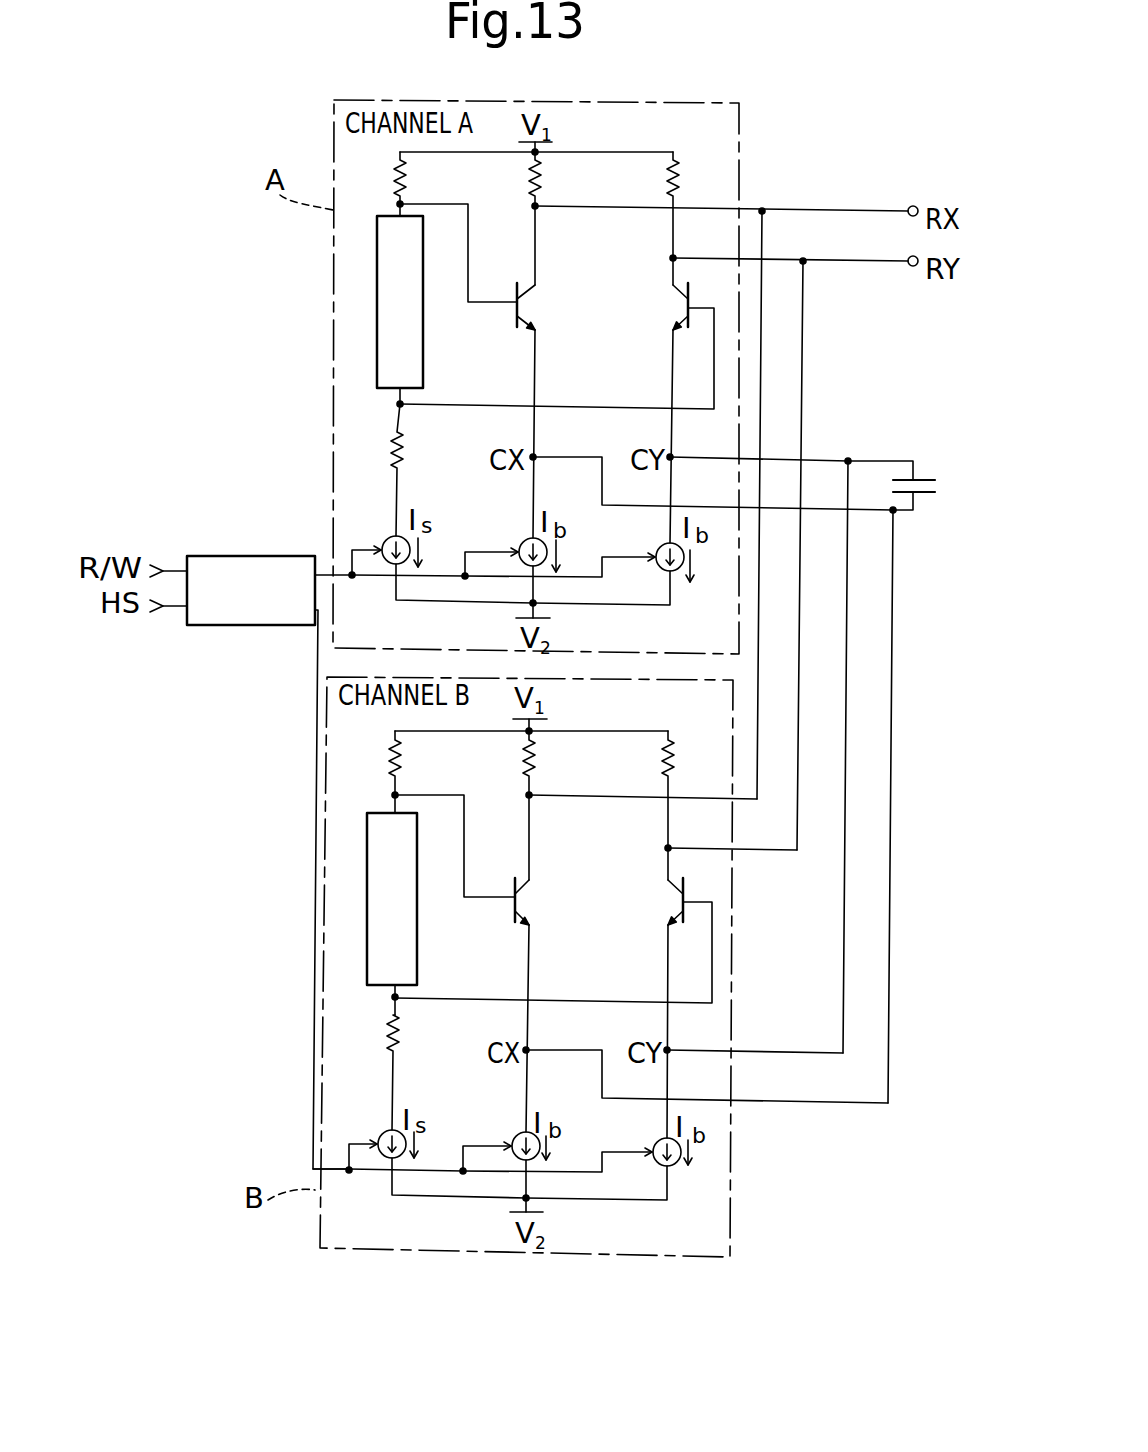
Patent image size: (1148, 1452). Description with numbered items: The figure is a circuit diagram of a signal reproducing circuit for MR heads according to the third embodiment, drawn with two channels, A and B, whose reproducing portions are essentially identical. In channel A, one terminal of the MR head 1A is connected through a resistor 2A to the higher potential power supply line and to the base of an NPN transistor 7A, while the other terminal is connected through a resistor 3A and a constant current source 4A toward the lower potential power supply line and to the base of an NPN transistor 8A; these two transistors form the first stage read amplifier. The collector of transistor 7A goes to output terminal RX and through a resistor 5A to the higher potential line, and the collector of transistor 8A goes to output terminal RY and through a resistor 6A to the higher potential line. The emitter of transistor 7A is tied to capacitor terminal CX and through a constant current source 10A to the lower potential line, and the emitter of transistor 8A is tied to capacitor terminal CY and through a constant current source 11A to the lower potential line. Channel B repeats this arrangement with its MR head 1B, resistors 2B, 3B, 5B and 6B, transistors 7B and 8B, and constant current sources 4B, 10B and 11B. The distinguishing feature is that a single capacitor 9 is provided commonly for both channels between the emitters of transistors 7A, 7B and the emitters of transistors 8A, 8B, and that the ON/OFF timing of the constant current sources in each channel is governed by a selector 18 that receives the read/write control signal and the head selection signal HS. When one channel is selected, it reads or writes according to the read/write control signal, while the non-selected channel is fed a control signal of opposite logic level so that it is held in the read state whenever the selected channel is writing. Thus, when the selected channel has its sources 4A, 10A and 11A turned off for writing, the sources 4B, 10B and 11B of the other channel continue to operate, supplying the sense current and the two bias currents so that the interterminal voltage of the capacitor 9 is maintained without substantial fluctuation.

The MR head 1A is at (424, 377).
The resistor 2A is at (398, 178).
The resistor 3A is at (390, 453).
The constant current source 4A is at (382, 534).
The resistor 5A is at (538, 181).
The resistor 6A is at (675, 179).
The NPN transistor 7A is at (531, 306).
The NPN transistor 8A is at (672, 305).
The constant current source 10A is at (522, 537).
The constant current source 11A is at (654, 546).
The MR head 1B is at (418, 917).
The resistor 2B is at (392, 748).
The resistor 3B is at (387, 1044).
The constant current source 4B is at (380, 1131).
The resistor 5B is at (532, 758).
The resistor 6B is at (670, 758).
The NPN transistor 7B is at (528, 902).
The NPN transistor 8B is at (668, 901).
The constant current source 10B is at (512, 1134).
The constant current source 11B is at (653, 1142).
The capacitor 9 is at (918, 478).
The selector 18 is at (279, 556).